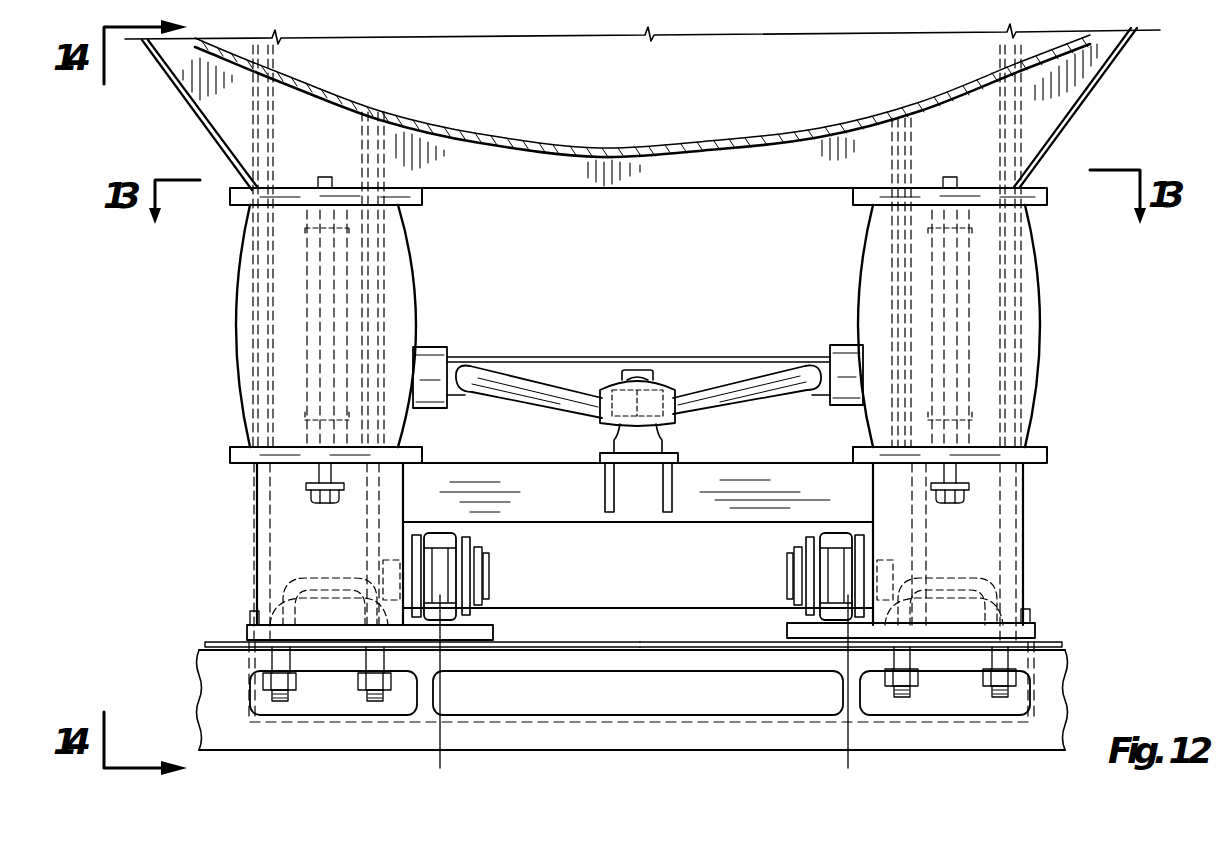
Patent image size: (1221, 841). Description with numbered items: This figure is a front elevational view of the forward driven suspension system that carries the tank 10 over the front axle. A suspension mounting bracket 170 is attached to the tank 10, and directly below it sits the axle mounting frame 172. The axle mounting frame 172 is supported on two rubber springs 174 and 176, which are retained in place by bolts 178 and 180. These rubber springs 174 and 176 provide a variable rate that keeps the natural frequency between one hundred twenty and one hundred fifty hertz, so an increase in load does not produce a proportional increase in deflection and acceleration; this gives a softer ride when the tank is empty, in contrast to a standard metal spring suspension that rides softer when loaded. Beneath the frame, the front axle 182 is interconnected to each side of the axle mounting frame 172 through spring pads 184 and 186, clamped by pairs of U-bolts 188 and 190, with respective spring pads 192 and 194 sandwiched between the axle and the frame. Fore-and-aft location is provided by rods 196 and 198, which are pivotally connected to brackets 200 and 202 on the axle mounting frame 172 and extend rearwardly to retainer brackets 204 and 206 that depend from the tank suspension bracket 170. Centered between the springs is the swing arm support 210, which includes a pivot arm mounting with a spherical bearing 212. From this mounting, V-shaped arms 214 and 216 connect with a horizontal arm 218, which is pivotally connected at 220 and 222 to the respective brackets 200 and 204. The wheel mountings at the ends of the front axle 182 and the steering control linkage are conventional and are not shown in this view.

The tank 10 is at (627, 148).
The suspension mounting bracket 170 is at (1100, 80).
The axle mounting frame 172 is at (256, 503).
The rubber spring 174 is at (1043, 272).
The rubber spring 176 is at (232, 287).
The bolt 178 is at (953, 500).
The bolt 180 is at (326, 500).
The front axle 182 is at (727, 752).
The spring pad 184 is at (1033, 630).
The spring pad 186 is at (255, 630).
The U-bolt 188 is at (992, 692).
The U-bolt 190 is at (289, 698).
The spring pad 192 is at (1060, 641).
The spring pad 194 is at (236, 648).
The rod 196 is at (851, 693).
The rod 198 is at (444, 693).
The bracket 200 is at (793, 560).
The bracket 202 is at (488, 572).
The retainer bracket 204 is at (1022, 324).
The retainer bracket 206 is at (378, 246).
The swing arm support 210 is at (638, 398).
The spherical bearing 212 is at (670, 414).
The V-shaped arm 214 is at (770, 378).
The V-shaped arm 216 is at (529, 394).
The horizontal arm 218 is at (584, 372).
The pivotal connection 220 is at (838, 352).
The pivotal connection 222 is at (433, 347).